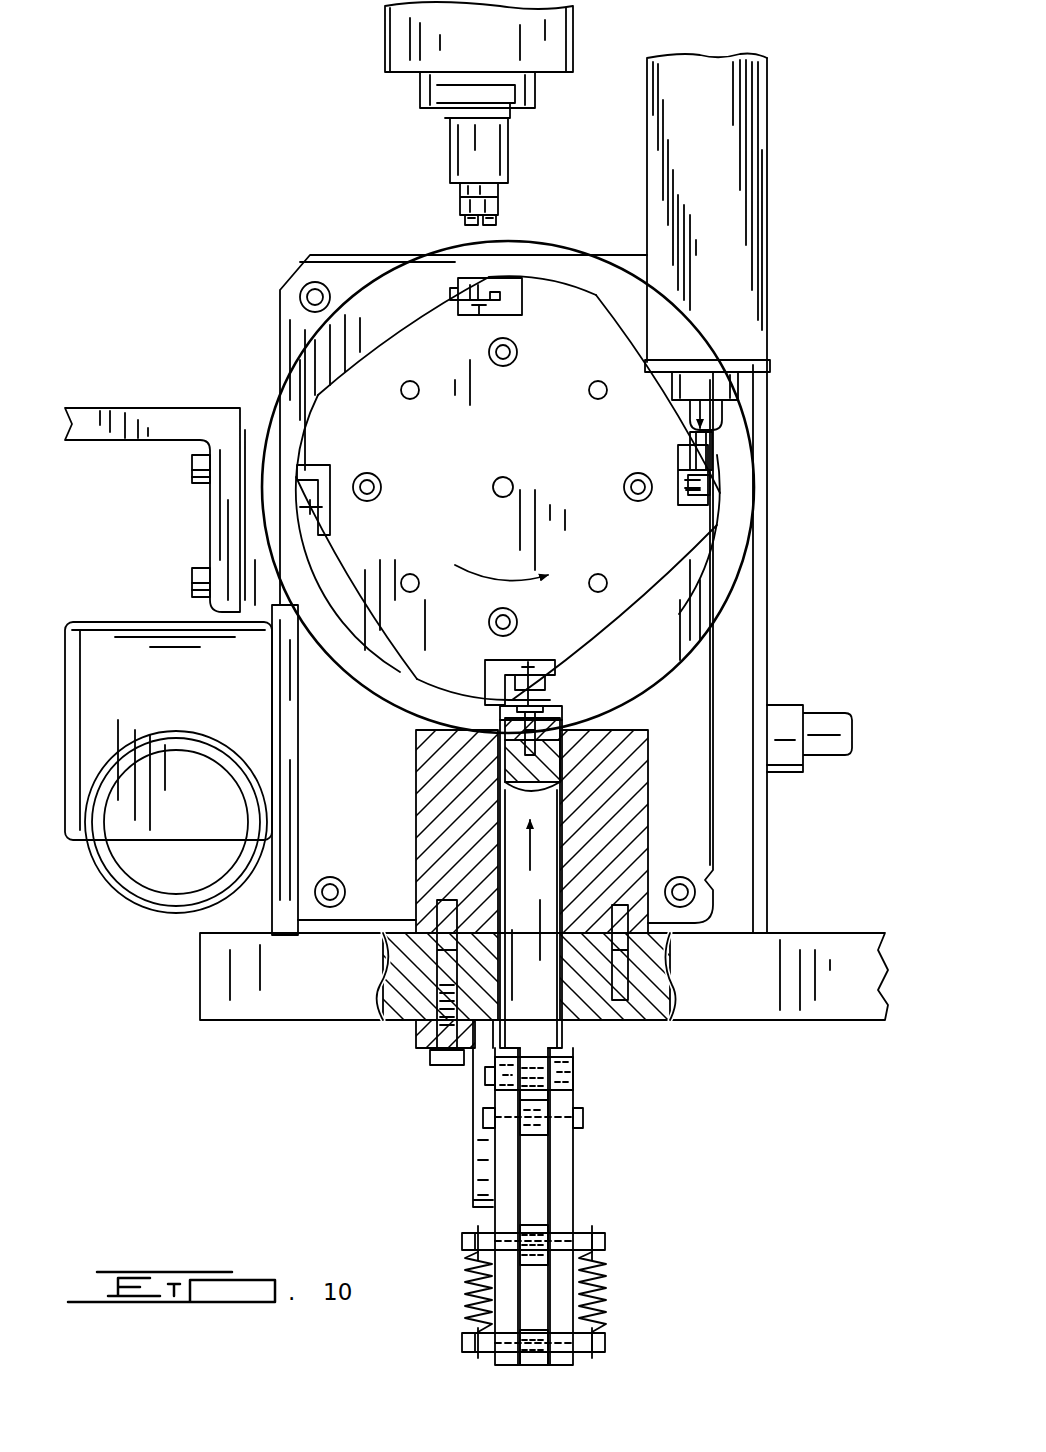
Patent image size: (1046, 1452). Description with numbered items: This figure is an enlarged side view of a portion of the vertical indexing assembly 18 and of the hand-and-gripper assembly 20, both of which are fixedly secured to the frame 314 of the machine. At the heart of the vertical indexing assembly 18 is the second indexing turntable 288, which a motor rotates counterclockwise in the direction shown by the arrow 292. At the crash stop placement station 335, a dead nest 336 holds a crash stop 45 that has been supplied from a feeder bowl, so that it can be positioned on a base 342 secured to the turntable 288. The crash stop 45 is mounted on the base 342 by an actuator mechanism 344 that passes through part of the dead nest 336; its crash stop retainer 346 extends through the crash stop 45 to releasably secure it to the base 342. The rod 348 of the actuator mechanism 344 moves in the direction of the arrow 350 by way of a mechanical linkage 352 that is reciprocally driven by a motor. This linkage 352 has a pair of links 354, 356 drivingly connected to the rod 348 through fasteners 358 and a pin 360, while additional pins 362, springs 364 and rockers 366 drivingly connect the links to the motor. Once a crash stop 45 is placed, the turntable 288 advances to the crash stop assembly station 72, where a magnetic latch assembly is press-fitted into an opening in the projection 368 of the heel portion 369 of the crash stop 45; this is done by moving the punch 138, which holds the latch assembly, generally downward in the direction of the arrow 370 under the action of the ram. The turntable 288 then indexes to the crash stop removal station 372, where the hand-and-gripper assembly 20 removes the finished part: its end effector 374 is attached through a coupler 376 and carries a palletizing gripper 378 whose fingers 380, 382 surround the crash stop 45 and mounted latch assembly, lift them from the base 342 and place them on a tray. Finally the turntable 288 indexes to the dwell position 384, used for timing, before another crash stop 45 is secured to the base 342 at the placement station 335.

The vertical indexing assembly 18 is at (353, 282).
The hand-and-gripper assembly 20 is at (380, 45).
The crash stop 45 is at (562, 712).
The crash stop assembly station 72 is at (672, 465).
The punch 138 is at (700, 447).
The second indexing turntable 288 is at (532, 471).
The arrow 292 is at (540, 580).
The frame 314 is at (762, 993).
The crash stop placement station 335 is at (492, 715).
The dead nest 336 is at (655, 856).
The base 342 is at (500, 683).
The actuator mechanism 344 is at (568, 1040).
The crash stop retainer 346 is at (560, 745).
The rod 348 is at (548, 800).
The arrow 350 is at (545, 840).
The mechanical linkage 352 is at (577, 1187).
The link 354 is at (505, 1163).
The link 356 is at (560, 1138).
The fasteners 358 is at (587, 1115).
The pin 360 is at (485, 1077).
The pins 362 is at (605, 1243).
The springs 364 is at (468, 1292).
The rockers 366 is at (530, 1225).
The projection 368 is at (705, 482).
The heel portion 369 is at (688, 495).
The arrow 370 is at (718, 410).
The crash stop removal station 372 is at (481, 318).
The end effector 374 is at (448, 140).
The coupler 376 is at (425, 95).
The palletizing gripper 378 is at (460, 200).
The finger 380 is at (470, 228).
The finger 382 is at (490, 228).
The dwell position 384 is at (336, 470).